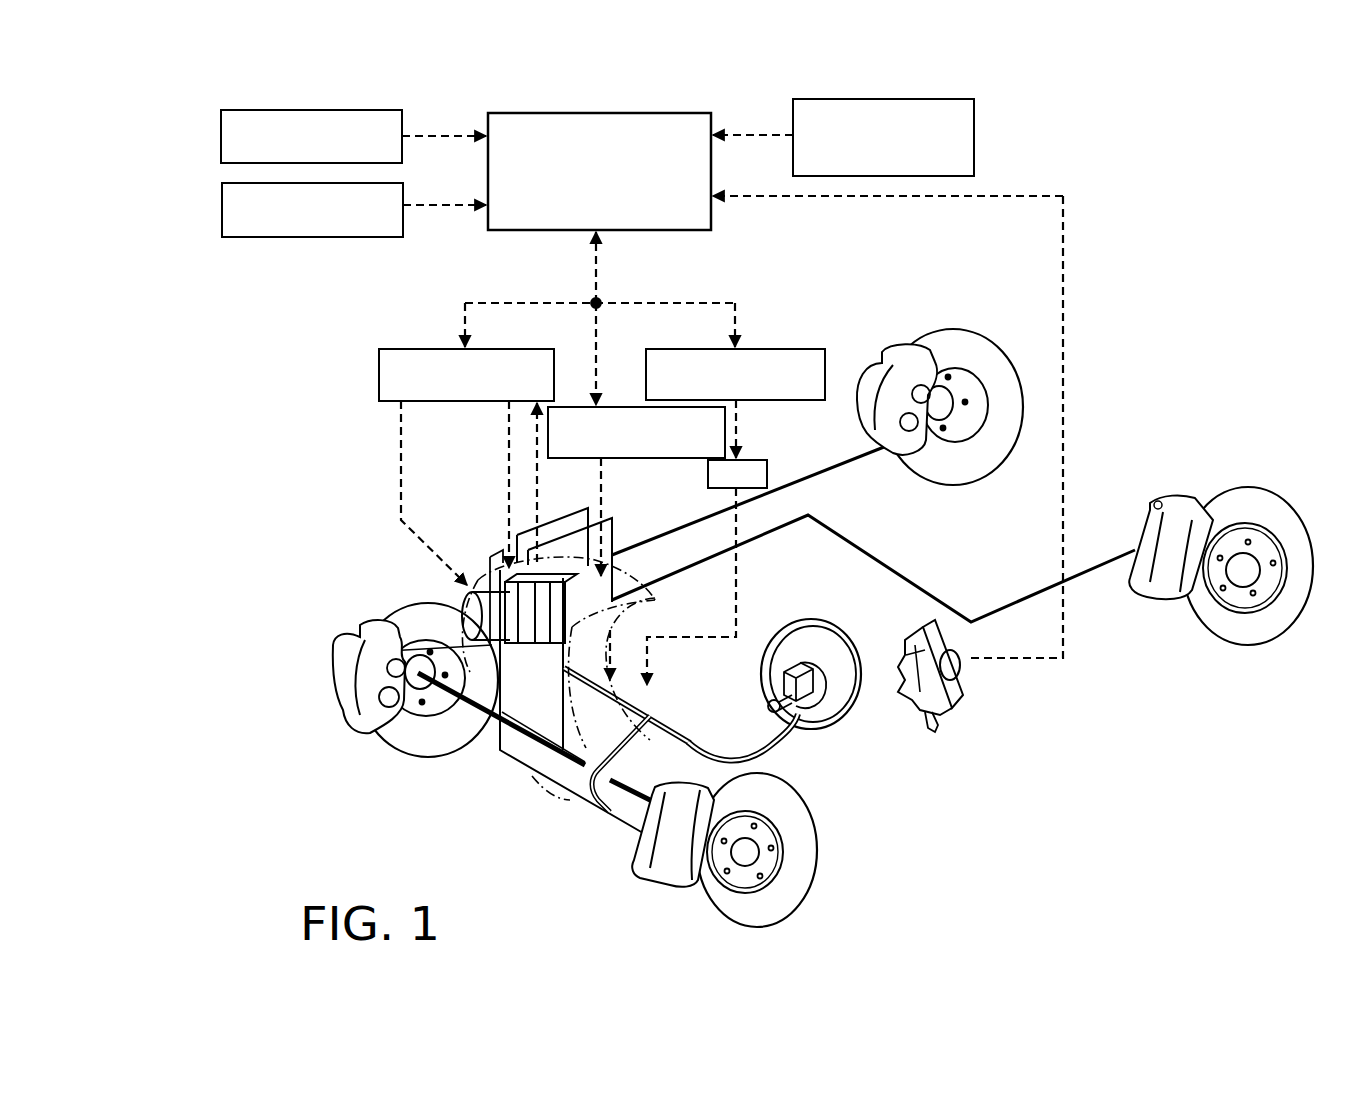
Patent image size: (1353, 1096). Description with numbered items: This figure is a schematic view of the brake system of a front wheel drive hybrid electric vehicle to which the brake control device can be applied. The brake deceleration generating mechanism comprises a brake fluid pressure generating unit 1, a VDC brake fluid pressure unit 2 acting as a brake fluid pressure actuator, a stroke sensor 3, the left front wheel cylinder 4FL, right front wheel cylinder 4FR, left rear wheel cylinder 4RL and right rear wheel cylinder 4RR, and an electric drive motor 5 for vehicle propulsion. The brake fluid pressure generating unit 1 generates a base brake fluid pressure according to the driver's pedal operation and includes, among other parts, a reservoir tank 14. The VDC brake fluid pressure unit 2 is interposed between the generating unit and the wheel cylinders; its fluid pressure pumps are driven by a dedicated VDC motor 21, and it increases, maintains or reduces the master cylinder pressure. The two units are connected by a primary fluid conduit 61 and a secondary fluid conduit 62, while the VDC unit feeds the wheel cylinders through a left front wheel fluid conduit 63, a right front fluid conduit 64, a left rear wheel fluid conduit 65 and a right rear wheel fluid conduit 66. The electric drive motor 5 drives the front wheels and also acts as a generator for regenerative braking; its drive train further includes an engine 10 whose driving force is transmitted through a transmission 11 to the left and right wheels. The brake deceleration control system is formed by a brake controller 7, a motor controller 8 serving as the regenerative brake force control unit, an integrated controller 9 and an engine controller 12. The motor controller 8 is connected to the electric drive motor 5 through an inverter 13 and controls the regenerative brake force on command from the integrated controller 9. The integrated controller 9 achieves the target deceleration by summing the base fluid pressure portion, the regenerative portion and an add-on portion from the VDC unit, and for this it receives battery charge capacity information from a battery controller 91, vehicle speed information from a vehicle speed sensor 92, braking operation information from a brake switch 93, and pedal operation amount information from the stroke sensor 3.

The brake fluid pressure generating unit 1 is at (862, 724).
The VDC brake fluid pressure unit 2 is at (480, 552).
The stroke sensor 3 is at (968, 716).
The right front wheel cylinder 4FR is at (352, 626).
The left front wheel cylinder 4FL is at (630, 852).
The right rear wheel cylinder 4RR is at (872, 345).
The left rear wheel cylinder 4RL is at (1185, 497).
The electric drive motor 5 is at (652, 622).
The brake controller 7 is at (392, 349).
The motor controller 8 is at (803, 349).
The integrated controller 9 is at (598, 113).
The engine 10 is at (560, 562).
The transmission 11 is at (704, 720).
The engine controller 12 is at (618, 407).
The inverter 13 is at (766, 466).
The reservoir tank 14 is at (790, 664).
The VDC motor 21 is at (476, 578).
The primary fluid conduit 61 is at (724, 752).
The secondary fluid conduit 62 is at (689, 728).
The left front wheel fluid conduit 63 is at (548, 772).
The right front fluid conduit 64 is at (462, 602).
The left rear wheel fluid conduit 65 is at (714, 568).
The right rear wheel fluid conduit 66 is at (690, 524).
The battery controller 91 is at (250, 237).
The vehicle speed sensor 92 is at (906, 99).
The brake switch 93 is at (253, 110).